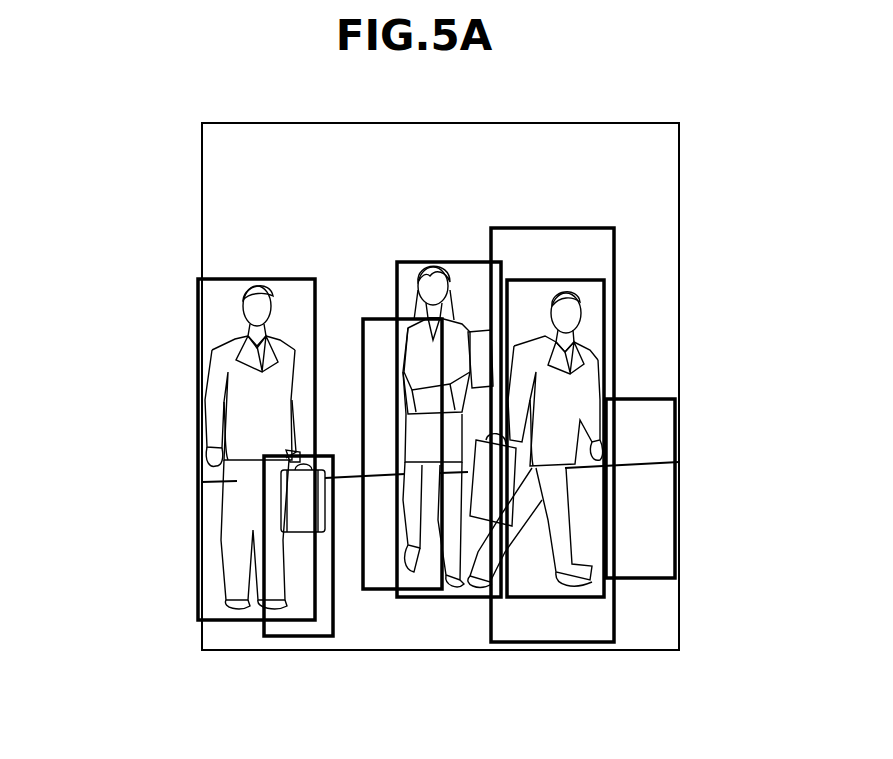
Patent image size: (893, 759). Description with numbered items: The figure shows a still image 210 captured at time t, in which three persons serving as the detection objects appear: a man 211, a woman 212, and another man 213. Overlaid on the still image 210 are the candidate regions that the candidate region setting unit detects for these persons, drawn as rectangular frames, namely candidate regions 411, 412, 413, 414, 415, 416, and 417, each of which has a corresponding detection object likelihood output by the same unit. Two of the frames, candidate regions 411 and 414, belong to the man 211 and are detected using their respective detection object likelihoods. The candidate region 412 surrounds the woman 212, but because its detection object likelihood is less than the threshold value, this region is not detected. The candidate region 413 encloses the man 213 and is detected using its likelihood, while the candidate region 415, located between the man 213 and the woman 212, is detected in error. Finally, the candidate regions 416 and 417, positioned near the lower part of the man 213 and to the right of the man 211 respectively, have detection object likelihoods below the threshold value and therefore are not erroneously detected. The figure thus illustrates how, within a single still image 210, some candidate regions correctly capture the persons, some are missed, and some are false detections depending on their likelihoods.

The still image 210 is at (272, 123).
The man 211 is at (577, 318).
The woman 212 is at (412, 272).
The man 213 is at (245, 311).
The candidate region 411 is at (585, 600).
The candidate region 412 is at (472, 600).
The candidate region 413 is at (222, 622).
The candidate region 414 is at (594, 228).
The candidate region 415 is at (371, 590).
The candidate region 416 is at (300, 638).
The candidate region 417 is at (645, 399).